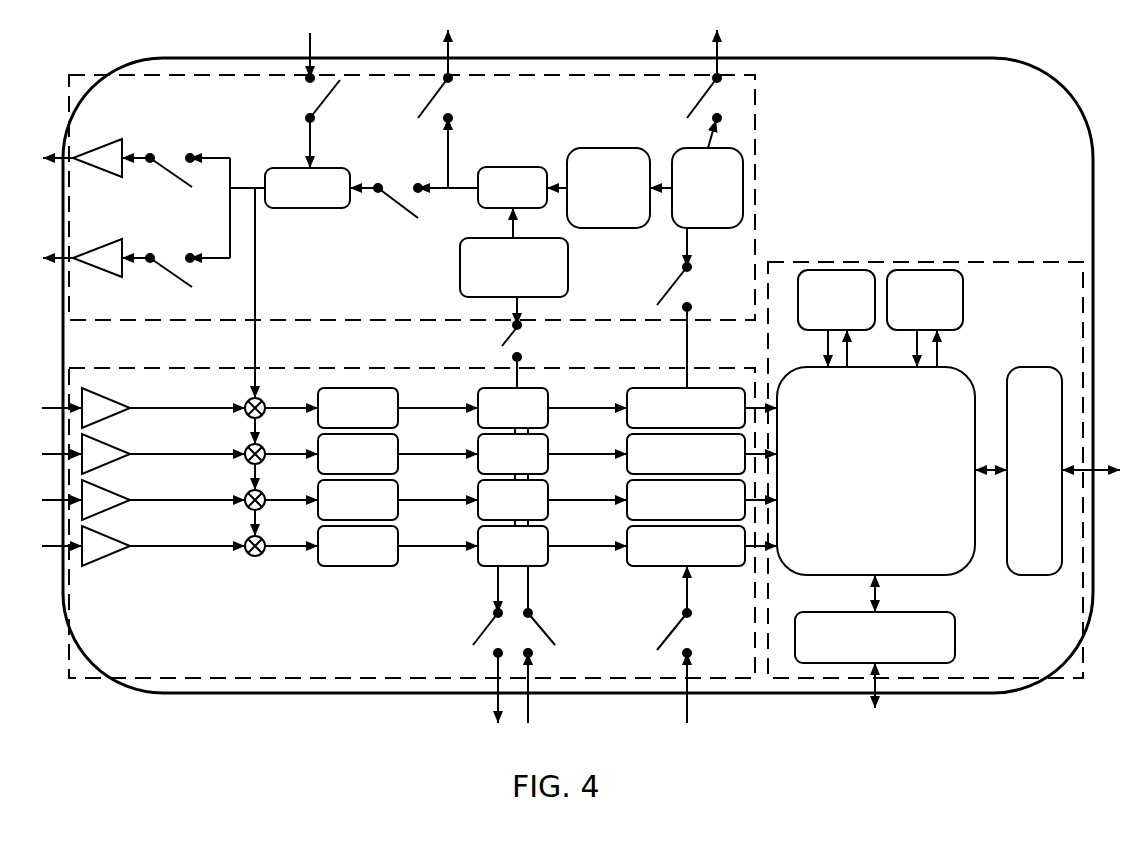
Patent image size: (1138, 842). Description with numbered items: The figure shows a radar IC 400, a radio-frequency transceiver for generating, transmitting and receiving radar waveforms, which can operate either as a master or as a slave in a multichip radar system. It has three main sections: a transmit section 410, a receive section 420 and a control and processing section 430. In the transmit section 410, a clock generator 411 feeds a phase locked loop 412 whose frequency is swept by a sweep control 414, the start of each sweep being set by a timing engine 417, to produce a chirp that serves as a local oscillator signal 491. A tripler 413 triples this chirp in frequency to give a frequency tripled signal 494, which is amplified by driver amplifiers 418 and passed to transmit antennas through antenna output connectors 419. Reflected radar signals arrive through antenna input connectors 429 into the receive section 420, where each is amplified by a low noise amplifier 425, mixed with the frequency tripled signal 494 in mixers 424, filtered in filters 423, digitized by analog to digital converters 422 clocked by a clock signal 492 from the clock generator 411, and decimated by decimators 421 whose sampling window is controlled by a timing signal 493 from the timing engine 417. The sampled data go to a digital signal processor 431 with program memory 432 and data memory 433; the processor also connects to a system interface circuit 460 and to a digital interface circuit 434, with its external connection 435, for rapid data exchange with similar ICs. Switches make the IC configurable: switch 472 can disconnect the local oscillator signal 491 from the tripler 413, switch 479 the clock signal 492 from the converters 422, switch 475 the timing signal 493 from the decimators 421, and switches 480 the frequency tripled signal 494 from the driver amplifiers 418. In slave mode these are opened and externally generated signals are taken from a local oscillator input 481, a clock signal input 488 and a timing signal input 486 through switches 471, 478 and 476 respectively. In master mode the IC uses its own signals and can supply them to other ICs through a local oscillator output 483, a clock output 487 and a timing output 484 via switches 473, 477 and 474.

The radar IC 400 is at (884, 133).
The transmit section 410 is at (136, 118).
The clock generator 411 is at (498, 279).
The phase locked loop 412 is at (496, 199).
The tripler 413 is at (291, 199).
The sweep control 414 is at (592, 199).
The timing engine 417 is at (691, 199).
The driver amplifiers 418 is at (88, 168).
The antenna output connectors 419 is at (47, 192).
The receive section 420 is at (124, 666).
The decimators 421 is at (670, 419).
The analog to digital converters 422 is at (497, 419).
The filters 423 is at (342, 419).
The mixers 424 is at (248, 399).
The low noise amplifier 425 is at (83, 419).
The antenna input connectors 429 is at (53, 464).
The control and processing section 430 is at (1020, 313).
The digital signal processor 431 is at (860, 481).
The program memory 432 is at (820, 311).
The data memory 433 is at (909, 311).
The digital interface circuit 434 is at (859, 648).
The external data interface 435 is at (875, 704).
The system interface circuit 460 is at (1018, 481).
The switch 471 is at (332, 95).
The switch 472 is at (386, 207).
The switch 473 is at (437, 96).
The switch 474 is at (699, 103).
The switch 475 is at (670, 290).
The switch 476 is at (677, 632).
The switch 477 is at (477, 638).
The switch 478 is at (544, 632).
The switch 479 is at (503, 340).
The switches 480 is at (176, 221).
The local oscillator input 481 is at (330, 49).
The local oscillator output 483 is at (469, 49).
The timing output 484 is at (736, 49).
The timing signal input 486 is at (708, 690).
The clock output 487 is at (478, 690).
The clock signal input 488 is at (549, 690).
The local oscillator signal 491 is at (448, 201).
The clock signal 492 is at (537, 311).
The timing signal 493 is at (708, 347).
The frequency tripled signal 494 is at (276, 293).